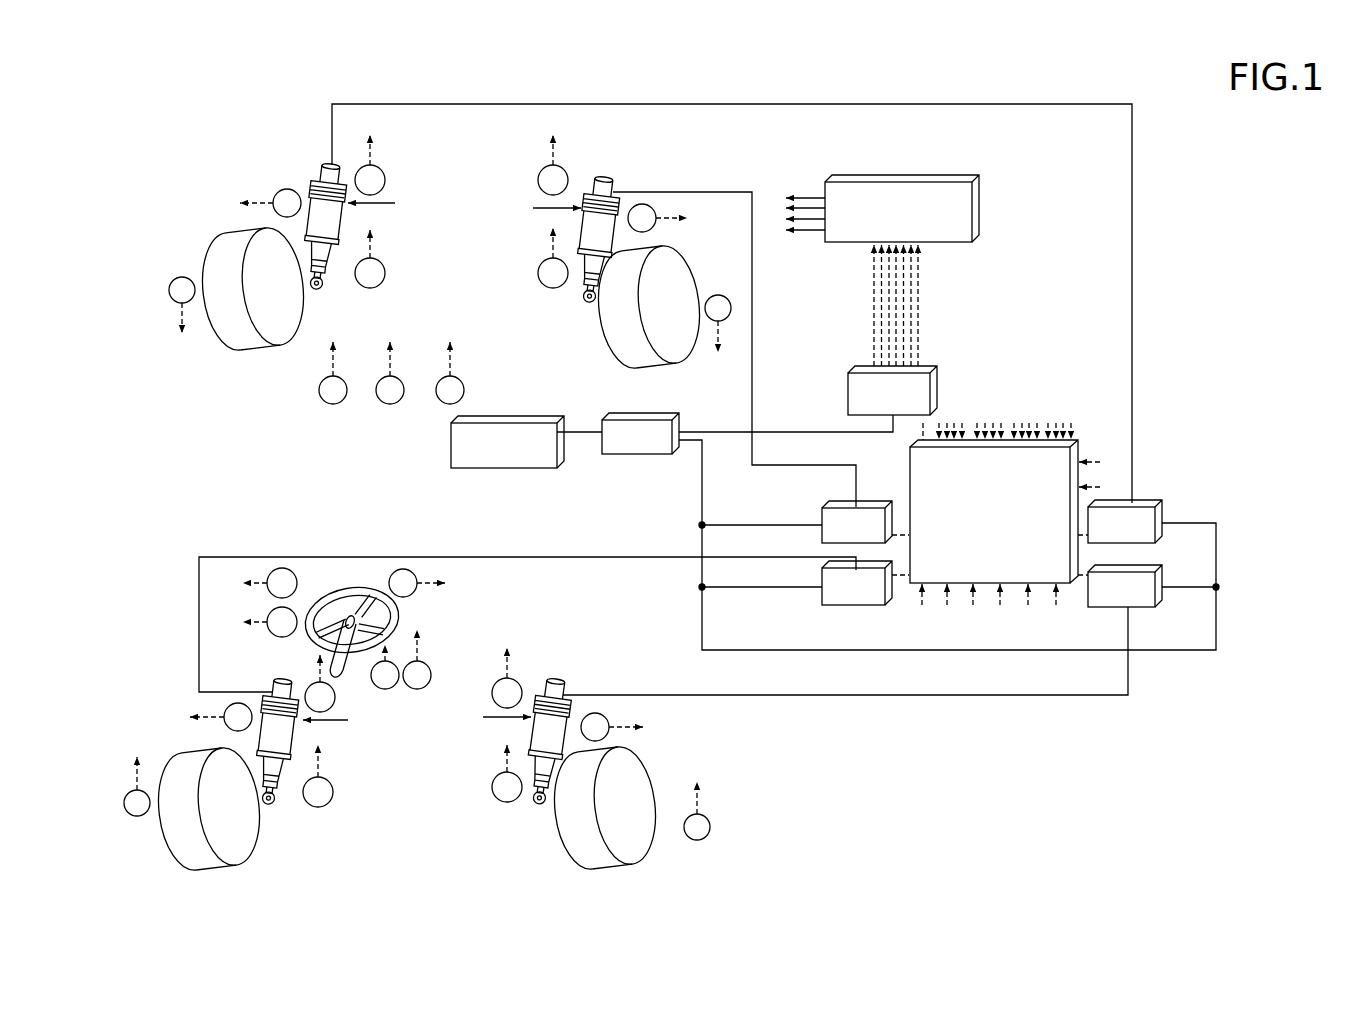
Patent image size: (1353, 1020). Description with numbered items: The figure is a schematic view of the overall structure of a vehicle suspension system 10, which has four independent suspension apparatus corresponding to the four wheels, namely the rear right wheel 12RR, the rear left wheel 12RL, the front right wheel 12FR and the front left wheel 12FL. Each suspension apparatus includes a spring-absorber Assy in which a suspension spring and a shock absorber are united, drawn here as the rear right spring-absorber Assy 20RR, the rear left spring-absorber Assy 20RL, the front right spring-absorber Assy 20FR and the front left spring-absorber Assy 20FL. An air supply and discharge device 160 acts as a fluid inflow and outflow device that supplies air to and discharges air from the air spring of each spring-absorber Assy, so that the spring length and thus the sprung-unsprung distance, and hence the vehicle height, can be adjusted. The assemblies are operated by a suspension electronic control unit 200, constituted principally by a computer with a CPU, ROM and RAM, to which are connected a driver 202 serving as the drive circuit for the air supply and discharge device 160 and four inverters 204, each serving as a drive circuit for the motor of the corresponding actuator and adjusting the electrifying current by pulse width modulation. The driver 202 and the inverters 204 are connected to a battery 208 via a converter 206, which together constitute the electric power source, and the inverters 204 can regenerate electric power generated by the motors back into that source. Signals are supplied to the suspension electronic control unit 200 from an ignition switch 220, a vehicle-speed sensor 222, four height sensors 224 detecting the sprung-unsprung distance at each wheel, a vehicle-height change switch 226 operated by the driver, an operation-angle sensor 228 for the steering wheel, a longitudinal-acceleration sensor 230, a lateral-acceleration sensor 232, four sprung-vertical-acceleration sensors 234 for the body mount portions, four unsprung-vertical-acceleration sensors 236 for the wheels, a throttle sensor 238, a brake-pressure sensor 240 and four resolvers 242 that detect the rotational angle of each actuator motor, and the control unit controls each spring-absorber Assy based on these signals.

The suspension system 10 is at (215, 110).
The rear right wheel 12RR is at (222, 257).
The rear left wheel 12RL is at (673, 345).
The front right wheel 12FR is at (175, 783).
The front left wheel 12FL is at (643, 777).
The rear right spring-absorber Assy 20RR is at (237, 183).
The rear left spring-absorber Assy 20RL is at (592, 172).
The front right spring-absorber Assy 20FR is at (188, 692).
The front left spring-absorber Assy 20FL is at (572, 650).
The air supply and discharge device 160 is at (948, 173).
The suspension electronic control unit 200 is at (913, 465).
The driver 202 is at (855, 384).
The inverter 204 is at (827, 503).
The converter 206 is at (622, 414).
The battery 208 is at (465, 461).
The ignition switch 220 is at (297, 578).
The vehicle-speed sensor 222 is at (321, 380).
The height sensor 224 is at (175, 282).
The vehicle-height change switch 226 is at (268, 612).
The operation-angle sensor 228 is at (415, 574).
The longitudinal-acceleration sensor 230 is at (379, 380).
The lateral-acceleration sensor 232 is at (439, 380).
The sprung-vertical-acceleration sensor 234 is at (384, 170).
The unsprung-vertical-acceleration sensor 236 is at (384, 262).
The throttle sensor 238 is at (395, 687).
The brake-pressure sensor 240 is at (428, 686).
The resolver 242 is at (277, 190).